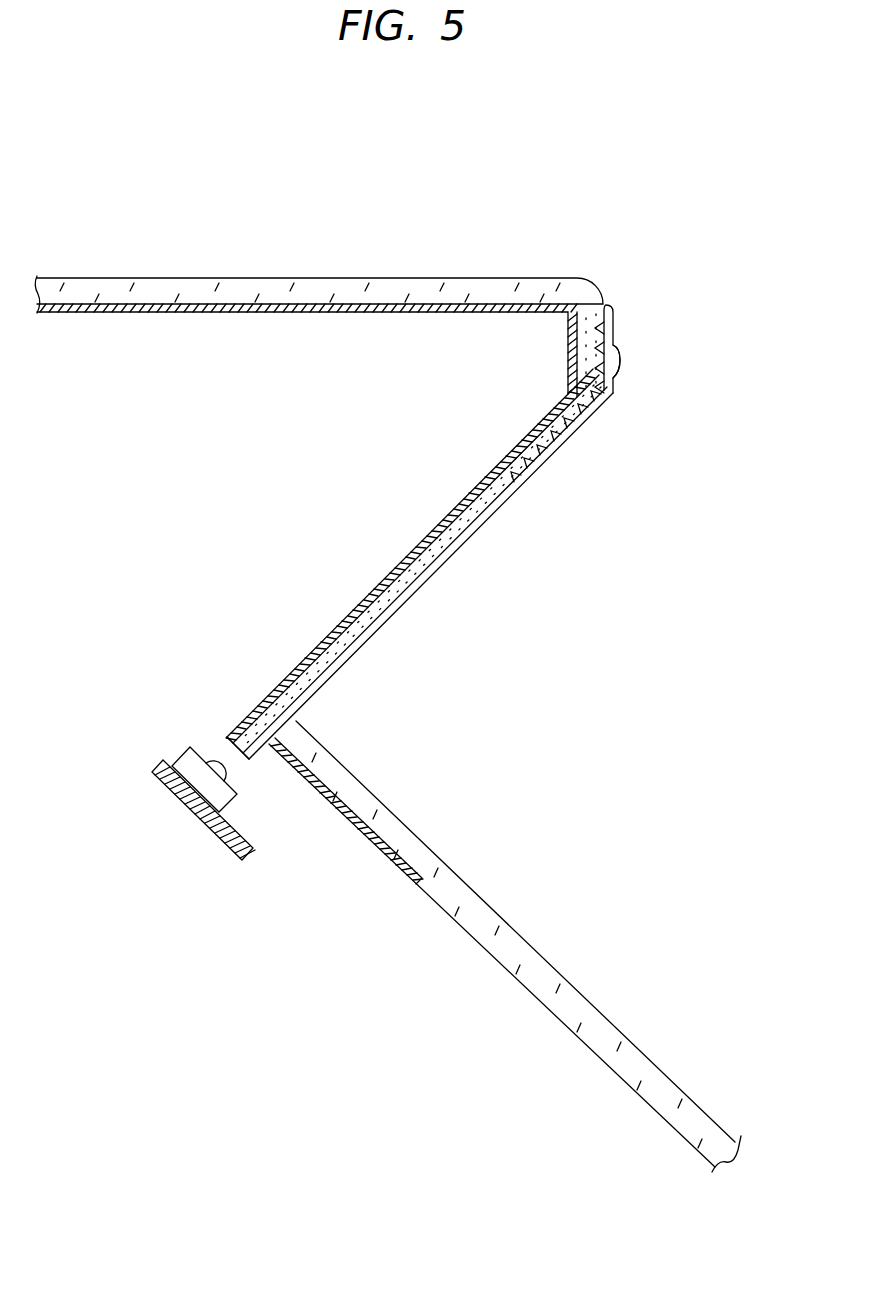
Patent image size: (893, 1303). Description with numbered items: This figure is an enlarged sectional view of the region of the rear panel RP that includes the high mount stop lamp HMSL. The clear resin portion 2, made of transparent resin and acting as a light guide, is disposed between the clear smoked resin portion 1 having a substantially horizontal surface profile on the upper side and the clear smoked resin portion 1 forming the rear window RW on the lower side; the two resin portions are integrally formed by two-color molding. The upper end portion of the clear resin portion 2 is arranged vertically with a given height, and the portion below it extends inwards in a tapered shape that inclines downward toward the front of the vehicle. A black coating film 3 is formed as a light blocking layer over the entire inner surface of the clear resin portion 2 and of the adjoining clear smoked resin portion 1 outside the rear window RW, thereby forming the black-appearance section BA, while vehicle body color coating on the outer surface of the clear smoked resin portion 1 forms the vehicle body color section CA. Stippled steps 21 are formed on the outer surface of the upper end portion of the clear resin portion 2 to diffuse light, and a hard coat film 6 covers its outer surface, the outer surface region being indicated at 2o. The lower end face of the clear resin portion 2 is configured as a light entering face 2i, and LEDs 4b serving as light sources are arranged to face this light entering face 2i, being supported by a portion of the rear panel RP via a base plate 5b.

The clear smoked resin molded portion 1 is at (135, 280).
The clear resin molded portion 2 is at (451, 526).
The outer portion of molding 2o is at (540, 486).
The light entering face 2i is at (246, 770).
The stippled steps 21 is at (598, 355).
The black coating film 3 is at (352, 309).
The LED 4b is at (186, 757).
The base plate 5b is at (168, 806).
The hard coat film 6 is at (491, 539).
The rear panel RP is at (403, 148).
The vehicle body color section CA is at (601, 214).
The high mount stop lamp HMSL is at (399, 717).
The black-appearance section BA is at (335, 697).
The rear window RW is at (472, 840).